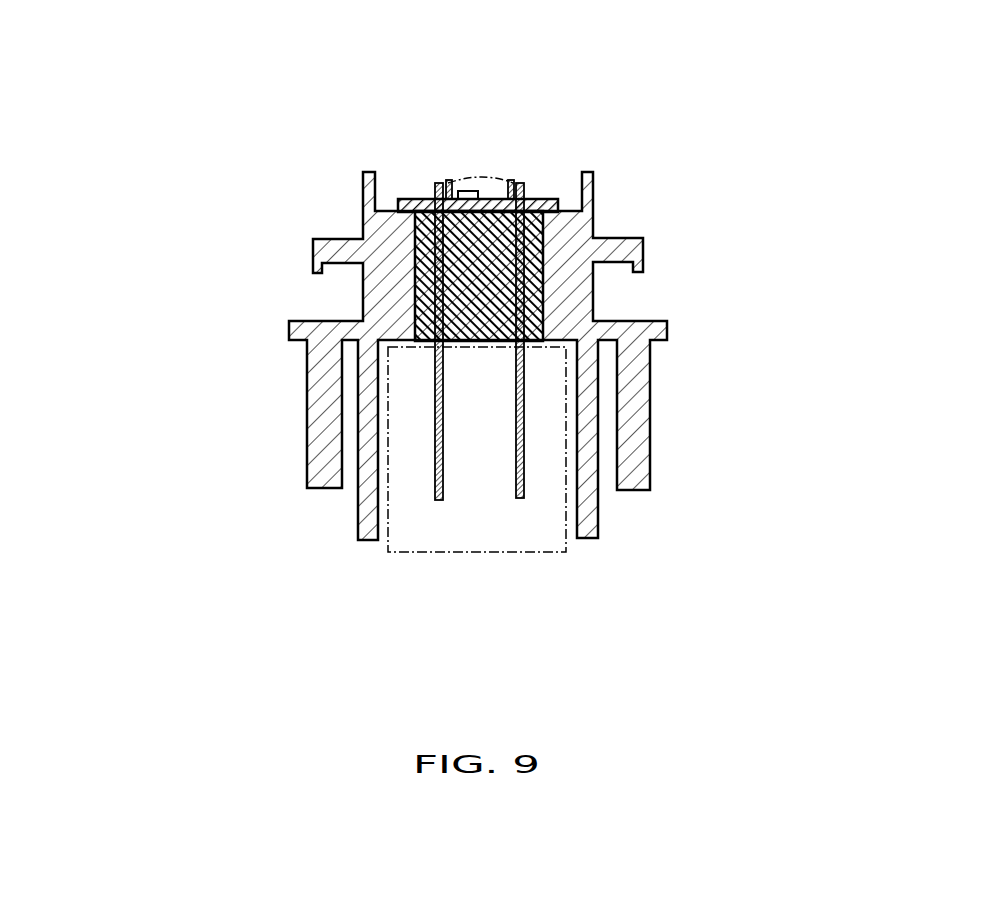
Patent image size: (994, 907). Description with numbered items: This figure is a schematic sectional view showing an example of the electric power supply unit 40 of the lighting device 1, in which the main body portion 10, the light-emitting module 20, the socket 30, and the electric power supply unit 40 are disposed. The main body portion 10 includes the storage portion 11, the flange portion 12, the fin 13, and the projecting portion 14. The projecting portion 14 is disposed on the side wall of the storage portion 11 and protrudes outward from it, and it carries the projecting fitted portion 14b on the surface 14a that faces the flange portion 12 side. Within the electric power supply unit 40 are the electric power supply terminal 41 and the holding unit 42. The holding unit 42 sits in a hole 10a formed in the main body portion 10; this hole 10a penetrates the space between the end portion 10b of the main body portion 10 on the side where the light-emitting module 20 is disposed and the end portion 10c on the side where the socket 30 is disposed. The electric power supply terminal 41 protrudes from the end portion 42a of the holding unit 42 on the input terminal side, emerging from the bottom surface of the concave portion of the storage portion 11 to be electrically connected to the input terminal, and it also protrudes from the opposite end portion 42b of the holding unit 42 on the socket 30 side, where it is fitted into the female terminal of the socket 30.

The lighting device 1 is at (647, 80).
The main body portion 10 is at (274, 382).
The hole 10a is at (527, 288).
The end portion of the main body portion 10b is at (390, 197).
The end portion of the main body portion 10c is at (408, 378).
The storage portion 11 is at (393, 282).
The flange portion 12 is at (292, 332).
The fin 13 is at (632, 428).
The projecting portion 14 is at (322, 231).
The surface 14a is at (333, 267).
The projecting fitted portion 14b is at (312, 272).
The light-emitting module 20 is at (471, 176).
The socket 30 is at (568, 562).
The electric power supply unit 40 is at (707, 143).
The electric power supply terminal 41 is at (520, 185).
The holding unit 42 is at (477, 287).
The end portion of the holding unit 42a is at (488, 203).
The end portion of the holding unit 42b is at (480, 345).